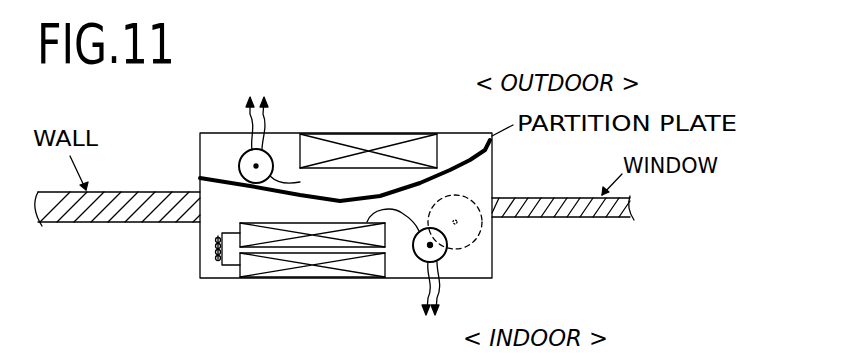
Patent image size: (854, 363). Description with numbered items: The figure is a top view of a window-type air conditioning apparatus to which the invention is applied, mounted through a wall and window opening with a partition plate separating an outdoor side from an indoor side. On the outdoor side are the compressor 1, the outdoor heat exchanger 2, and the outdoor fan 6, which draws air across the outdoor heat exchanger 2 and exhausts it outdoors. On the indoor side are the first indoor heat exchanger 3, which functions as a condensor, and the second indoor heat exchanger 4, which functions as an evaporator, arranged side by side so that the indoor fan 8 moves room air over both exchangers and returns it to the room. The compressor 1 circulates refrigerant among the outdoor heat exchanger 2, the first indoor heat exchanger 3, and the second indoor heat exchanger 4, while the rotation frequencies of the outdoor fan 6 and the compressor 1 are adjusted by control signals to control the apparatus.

The compressor 1 is at (483, 233).
The outdoor heat exchanger 2 is at (337, 130).
The first indoor heat exchanger 3 is at (245, 268).
The second indoor heat exchanger 4 is at (262, 222).
The outdoor fan 6 is at (243, 153).
The indoor fan 8 is at (407, 260).